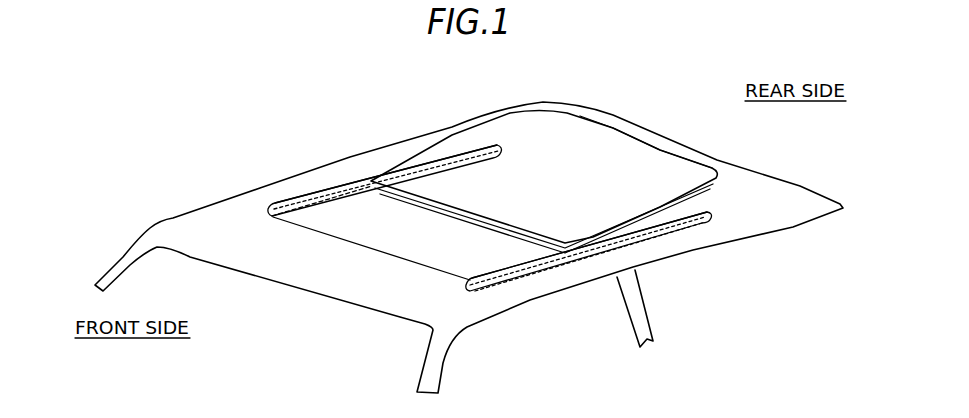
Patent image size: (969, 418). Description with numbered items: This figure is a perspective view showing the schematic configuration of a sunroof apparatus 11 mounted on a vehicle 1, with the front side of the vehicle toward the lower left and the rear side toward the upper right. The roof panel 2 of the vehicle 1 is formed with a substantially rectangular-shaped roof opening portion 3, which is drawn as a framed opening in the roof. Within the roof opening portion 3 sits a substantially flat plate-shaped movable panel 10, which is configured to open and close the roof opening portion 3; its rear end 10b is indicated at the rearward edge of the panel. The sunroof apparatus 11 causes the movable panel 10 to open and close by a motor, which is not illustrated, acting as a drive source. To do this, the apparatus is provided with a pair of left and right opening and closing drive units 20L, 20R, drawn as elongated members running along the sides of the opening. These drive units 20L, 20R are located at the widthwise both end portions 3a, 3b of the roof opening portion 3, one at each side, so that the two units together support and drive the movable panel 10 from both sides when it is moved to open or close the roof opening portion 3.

The vehicle 1 is at (469, 226).
The sunroof apparatus 11 is at (469, 247).
The roof panel 2 is at (370, 152).
The roof opening portion 3 is at (489, 209).
The widthwise end portion of roof opening portion 3a is at (527, 262).
The widthwise end portion of roof opening portion 3b is at (328, 187).
The movable panel 10 is at (544, 169).
The rear end 10b is at (607, 145).
The right opening and closing drive unit 20R is at (360, 205).
The left opening and closing drive unit 20L is at (537, 285).